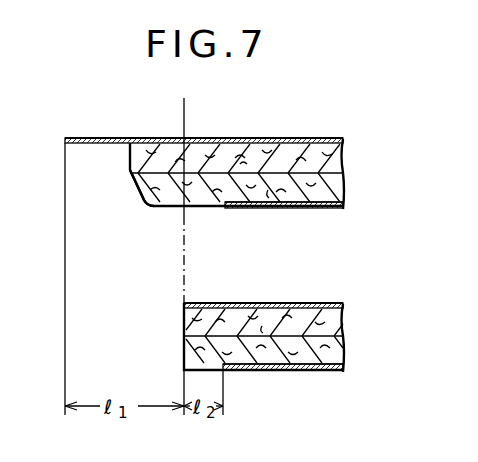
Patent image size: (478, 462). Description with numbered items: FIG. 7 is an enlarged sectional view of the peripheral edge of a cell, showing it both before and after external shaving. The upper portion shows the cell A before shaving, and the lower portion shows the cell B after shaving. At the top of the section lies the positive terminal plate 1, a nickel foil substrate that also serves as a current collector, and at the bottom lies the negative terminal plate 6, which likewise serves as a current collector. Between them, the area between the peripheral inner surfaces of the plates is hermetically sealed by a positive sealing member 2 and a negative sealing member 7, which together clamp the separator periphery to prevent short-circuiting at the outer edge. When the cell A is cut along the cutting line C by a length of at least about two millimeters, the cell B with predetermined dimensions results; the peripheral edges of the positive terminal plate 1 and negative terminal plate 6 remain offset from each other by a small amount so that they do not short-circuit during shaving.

The positive terminal plate 1 is at (102, 138).
The positive sealing member 2 is at (208, 160).
The negative terminal plate 6 is at (248, 208).
The negative sealing member 7 is at (152, 207).
The cell before external shaving A is at (234, 260).
The cell after external shaving B is at (302, 337).
The cutting line C is at (183, 245).